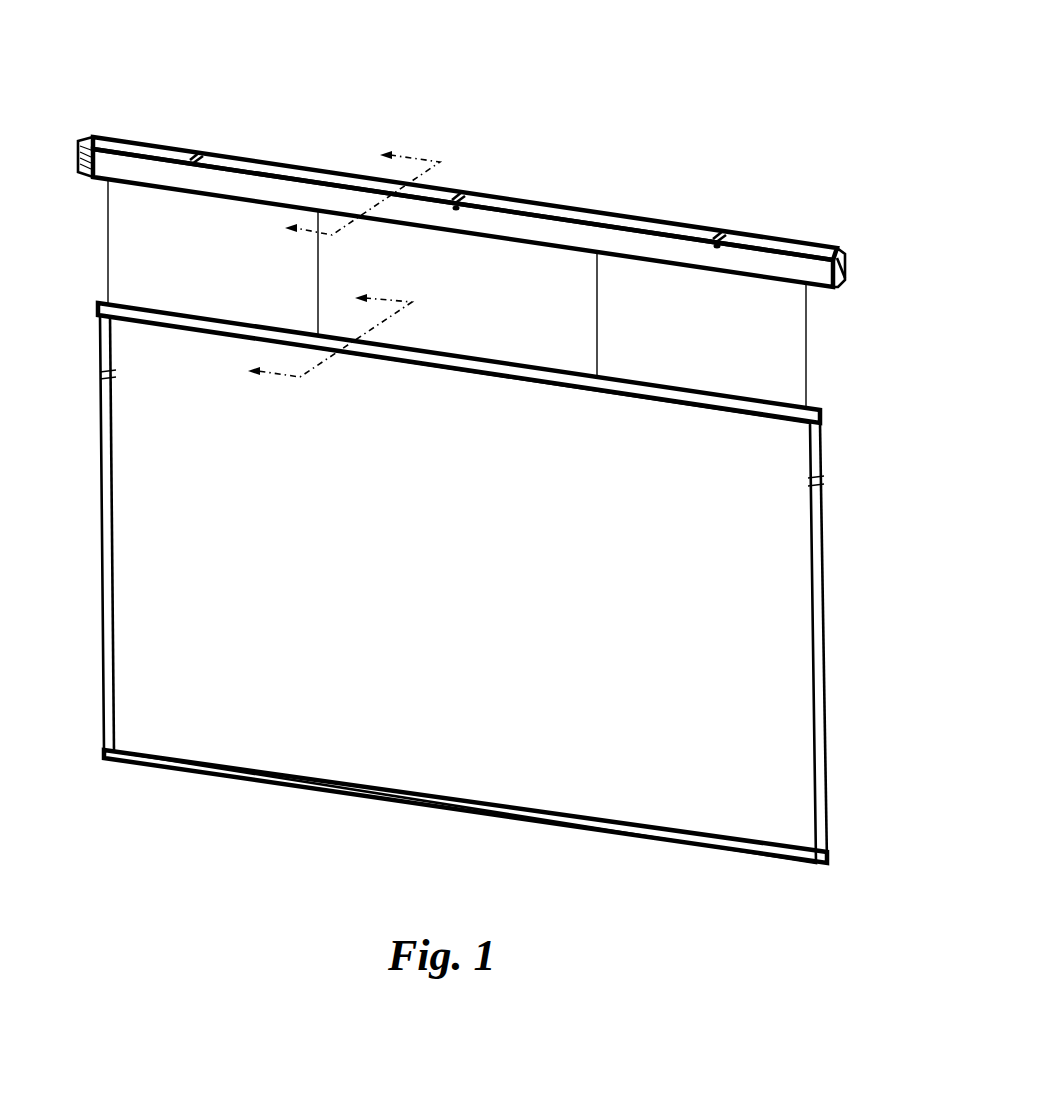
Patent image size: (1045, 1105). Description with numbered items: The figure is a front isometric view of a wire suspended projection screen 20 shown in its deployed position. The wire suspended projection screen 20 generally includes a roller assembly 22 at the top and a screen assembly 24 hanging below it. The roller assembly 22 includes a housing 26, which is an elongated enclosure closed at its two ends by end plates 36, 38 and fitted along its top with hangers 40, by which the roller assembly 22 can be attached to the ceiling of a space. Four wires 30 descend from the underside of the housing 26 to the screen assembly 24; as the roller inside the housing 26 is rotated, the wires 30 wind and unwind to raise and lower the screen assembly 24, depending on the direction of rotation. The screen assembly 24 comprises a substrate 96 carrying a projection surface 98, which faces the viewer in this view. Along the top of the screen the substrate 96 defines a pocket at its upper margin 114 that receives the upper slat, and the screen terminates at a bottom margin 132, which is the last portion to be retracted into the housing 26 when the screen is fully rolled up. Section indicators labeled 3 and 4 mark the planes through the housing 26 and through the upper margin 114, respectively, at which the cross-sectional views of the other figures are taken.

The wire suspended projection screen 20 is at (740, 137).
The roller assembly 22 is at (872, 184).
The screen assembly 24 is at (870, 412).
The housing 26 is at (745, 262).
The wires 30 is at (107, 249).
The end plate 36 is at (838, 246).
The end plate 38 is at (88, 148).
The hangers 40 is at (196, 163).
The substrate 96 is at (104, 675).
The projection surface 98 is at (449, 595).
The upper margin 114 is at (150, 322).
The bottom margin 132 is at (361, 797).
The section line 3- 3 is at (357, 200).
The section line 4- 4 is at (317, 325).